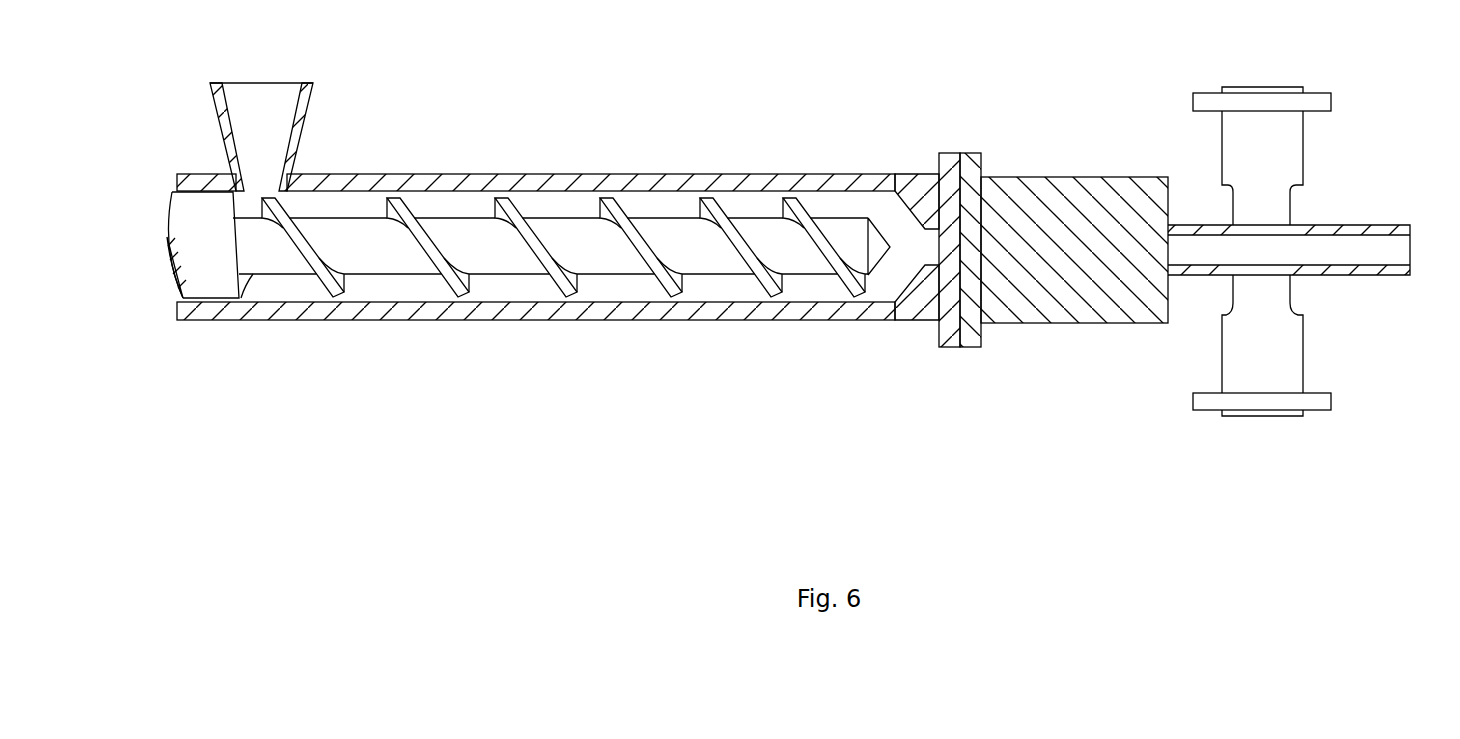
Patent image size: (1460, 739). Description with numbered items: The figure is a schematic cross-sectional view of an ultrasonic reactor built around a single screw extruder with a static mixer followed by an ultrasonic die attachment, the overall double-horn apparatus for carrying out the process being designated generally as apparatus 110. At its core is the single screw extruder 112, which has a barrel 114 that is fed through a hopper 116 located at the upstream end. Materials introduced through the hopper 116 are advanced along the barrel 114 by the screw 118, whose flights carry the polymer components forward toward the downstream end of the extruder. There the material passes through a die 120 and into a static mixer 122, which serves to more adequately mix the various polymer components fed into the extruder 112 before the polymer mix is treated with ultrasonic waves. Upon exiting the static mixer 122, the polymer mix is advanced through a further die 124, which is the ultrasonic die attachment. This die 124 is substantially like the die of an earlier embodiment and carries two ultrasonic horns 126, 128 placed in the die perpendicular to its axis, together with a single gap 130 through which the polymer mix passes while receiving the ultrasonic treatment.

The apparatus 110 is at (718, 155).
The single screw extruder 112 is at (615, 288).
The barrel 114 is at (463, 180).
The hopper 116 is at (268, 125).
The screw 118 is at (372, 250).
The die 120 is at (927, 305).
The static mixer 122 is at (1073, 192).
The die 124 is at (1377, 230).
The horn 126 is at (1270, 327).
The horn 128 is at (1262, 213).
The gap 130 is at (1262, 247).